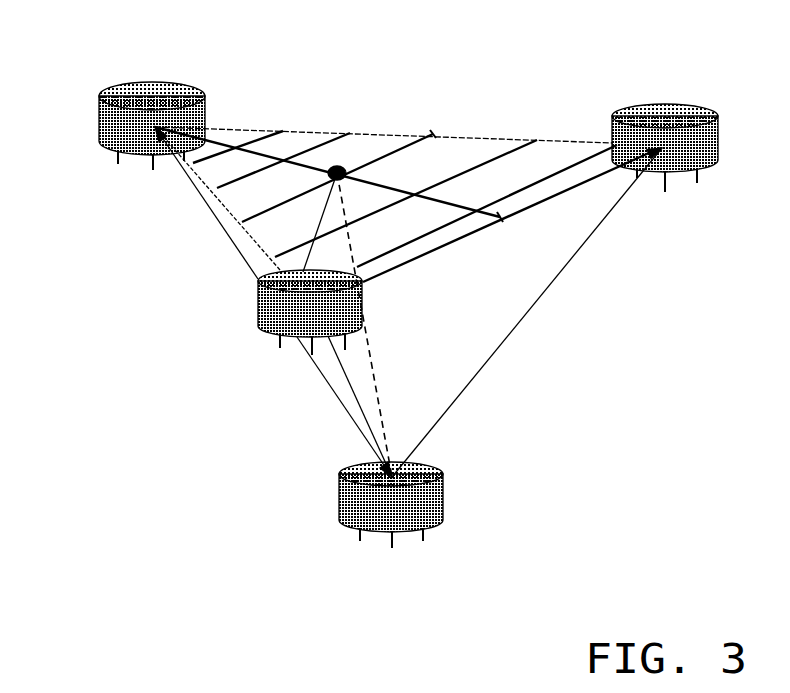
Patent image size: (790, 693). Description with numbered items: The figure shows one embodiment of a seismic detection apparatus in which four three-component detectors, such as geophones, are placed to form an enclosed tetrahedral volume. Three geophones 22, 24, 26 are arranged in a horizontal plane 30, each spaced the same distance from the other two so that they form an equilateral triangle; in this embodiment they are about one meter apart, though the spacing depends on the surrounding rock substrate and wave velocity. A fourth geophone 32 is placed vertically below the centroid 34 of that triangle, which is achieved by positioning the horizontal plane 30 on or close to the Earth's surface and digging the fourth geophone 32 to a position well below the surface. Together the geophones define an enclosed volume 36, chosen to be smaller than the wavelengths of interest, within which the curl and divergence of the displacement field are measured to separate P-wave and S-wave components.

The geophone 22 is at (260, 312).
The geophone 24 is at (99, 118).
The geophone 26 is at (717, 167).
The horizontal plane 30 is at (468, 148).
The fourth geophone 32 is at (345, 525).
The centroid 34 is at (337, 173).
The enclosed volume 36 is at (482, 320).